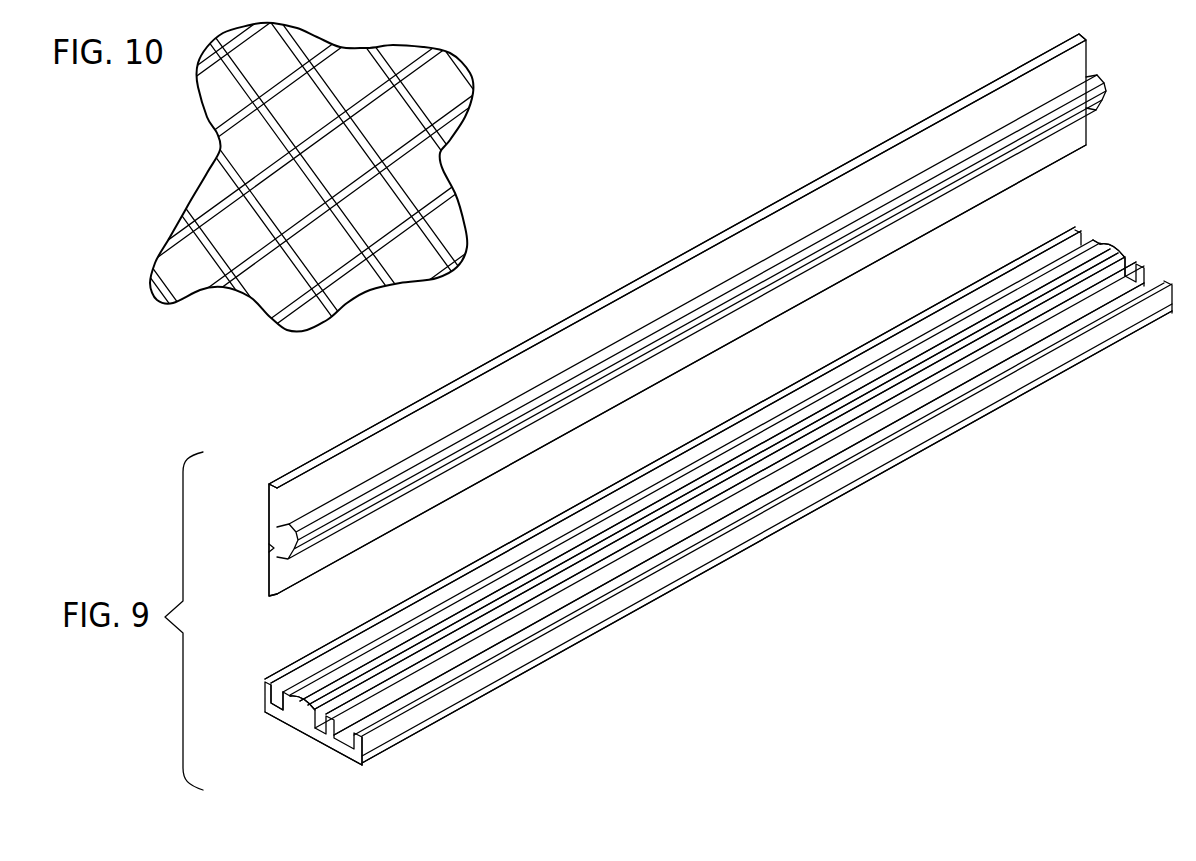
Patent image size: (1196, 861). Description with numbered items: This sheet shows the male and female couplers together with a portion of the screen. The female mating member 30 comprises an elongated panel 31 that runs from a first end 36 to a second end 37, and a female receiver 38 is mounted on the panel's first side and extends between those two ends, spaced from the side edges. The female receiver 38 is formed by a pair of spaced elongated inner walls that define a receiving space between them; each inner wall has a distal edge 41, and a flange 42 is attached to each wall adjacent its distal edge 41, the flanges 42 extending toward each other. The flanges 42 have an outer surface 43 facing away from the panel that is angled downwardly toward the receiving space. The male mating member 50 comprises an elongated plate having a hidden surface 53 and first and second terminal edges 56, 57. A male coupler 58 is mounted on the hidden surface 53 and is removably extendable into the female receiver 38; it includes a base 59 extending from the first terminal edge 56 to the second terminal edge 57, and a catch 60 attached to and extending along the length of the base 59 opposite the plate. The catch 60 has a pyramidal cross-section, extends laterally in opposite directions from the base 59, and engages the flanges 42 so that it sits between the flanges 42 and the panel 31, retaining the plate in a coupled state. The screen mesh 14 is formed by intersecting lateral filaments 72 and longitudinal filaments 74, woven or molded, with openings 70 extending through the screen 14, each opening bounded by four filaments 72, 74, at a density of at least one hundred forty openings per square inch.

In FIG. 10, the screen mesh 14 is at (316, 261).
In FIG. 10, the openings 70 is at (432, 84).
In FIG. 10, the lateral filaments 72 is at (407, 147).
In FIG. 10, the longitudinal filaments 74 is at (405, 192).
In FIG. 9, the female mating member 30 is at (697, 488).
In FIG. 9, the elongated panel 31 is at (347, 758).
In FIG. 9, the first end 36 is at (312, 733).
In FIG. 9, the second end 37 is at (1112, 254).
In FIG. 9, the female receiver 38 is at (1112, 240).
In FIG. 9, the distal edge 41 is at (308, 688).
In FIG. 9, the flange 42 is at (322, 732).
In FIG. 9, the outer surface 43 is at (358, 678).
In FIG. 9, the male mating member 50 is at (678, 311).
In FIG. 9, the hidden surface 53 is at (1068, 70).
In FIG. 9, the first terminal edge 56 is at (268, 510).
In FIG. 9, the second terminal edge 57 is at (1086, 45).
In FIG. 9, the male coupler 58 is at (1105, 99).
In FIG. 9, the base 59 is at (270, 552).
In FIG. 9, the catch 60 is at (355, 520).